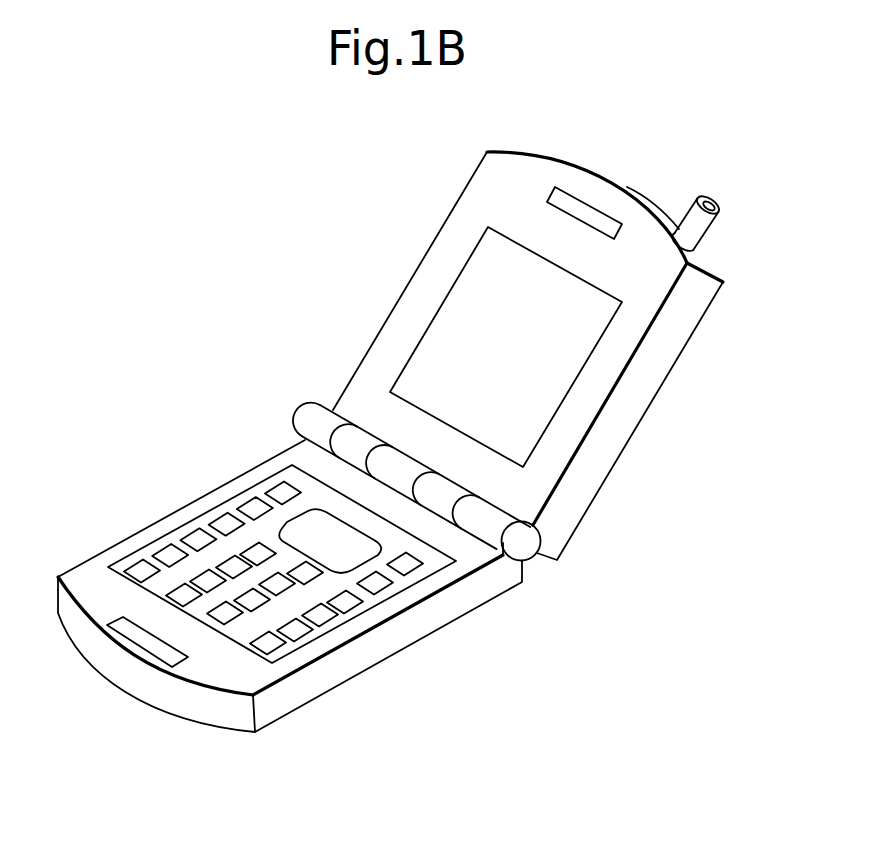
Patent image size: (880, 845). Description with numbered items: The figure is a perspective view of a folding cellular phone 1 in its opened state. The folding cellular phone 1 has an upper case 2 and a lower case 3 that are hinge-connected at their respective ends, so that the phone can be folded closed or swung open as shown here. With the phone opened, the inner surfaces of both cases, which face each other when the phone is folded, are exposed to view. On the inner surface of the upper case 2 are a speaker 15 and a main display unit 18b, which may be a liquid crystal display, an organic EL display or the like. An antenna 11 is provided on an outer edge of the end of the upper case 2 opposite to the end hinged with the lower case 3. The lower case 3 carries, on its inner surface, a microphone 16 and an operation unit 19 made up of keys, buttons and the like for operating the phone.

The folding cellular phone 1 is at (257, 293).
The upper case 2 is at (592, 470).
The lower case 3 is at (457, 607).
The antenna 11 is at (710, 206).
The speaker 15 is at (548, 198).
The microphone 16 is at (143, 642).
The main display unit 18b is at (530, 357).
The operation unit 19 is at (237, 523).